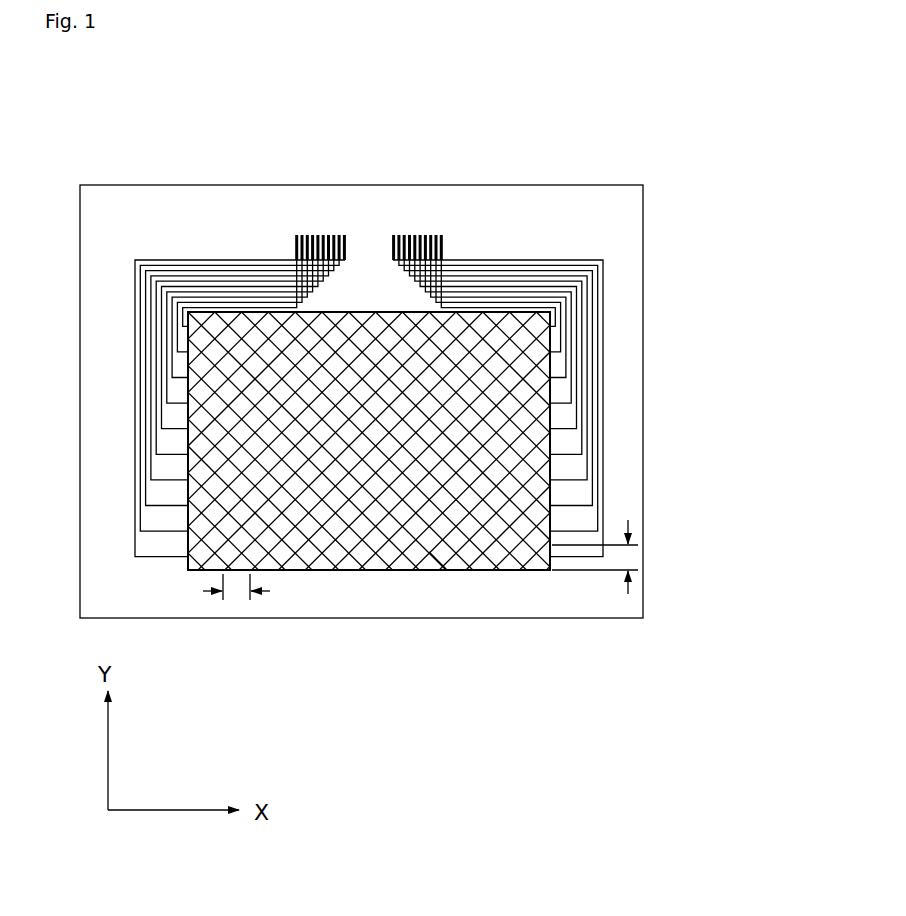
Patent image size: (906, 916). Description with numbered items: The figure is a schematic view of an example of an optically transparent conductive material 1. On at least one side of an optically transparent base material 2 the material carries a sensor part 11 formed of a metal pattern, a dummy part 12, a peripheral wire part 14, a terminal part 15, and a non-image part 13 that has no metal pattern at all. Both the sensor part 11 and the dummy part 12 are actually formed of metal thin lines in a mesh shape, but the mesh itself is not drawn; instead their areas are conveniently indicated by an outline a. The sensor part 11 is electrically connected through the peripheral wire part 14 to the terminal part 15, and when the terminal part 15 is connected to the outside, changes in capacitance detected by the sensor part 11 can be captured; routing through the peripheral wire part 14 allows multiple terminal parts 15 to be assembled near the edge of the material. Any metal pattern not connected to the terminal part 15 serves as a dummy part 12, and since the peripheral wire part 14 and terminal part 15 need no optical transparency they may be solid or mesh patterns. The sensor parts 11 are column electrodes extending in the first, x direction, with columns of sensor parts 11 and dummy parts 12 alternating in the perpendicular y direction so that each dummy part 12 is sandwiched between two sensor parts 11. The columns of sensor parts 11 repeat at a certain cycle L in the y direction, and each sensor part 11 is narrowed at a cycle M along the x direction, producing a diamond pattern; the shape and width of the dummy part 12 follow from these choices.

The optically transparent conductive material 1 is at (415, 361).
The optically transparent base material 2 is at (419, 361).
The sensor part 11 is at (415, 465).
The dummy part 12 is at (415, 462).
The non-image part 13 is at (278, 598).
The peripheral wire part 14 is at (353, 387).
The terminal part 15 is at (316, 225).
The outline a is at (441, 551).
The cycle of narrowing of the sensor part M is at (236, 587).
The cycle of the sensor parts L is at (595, 557).